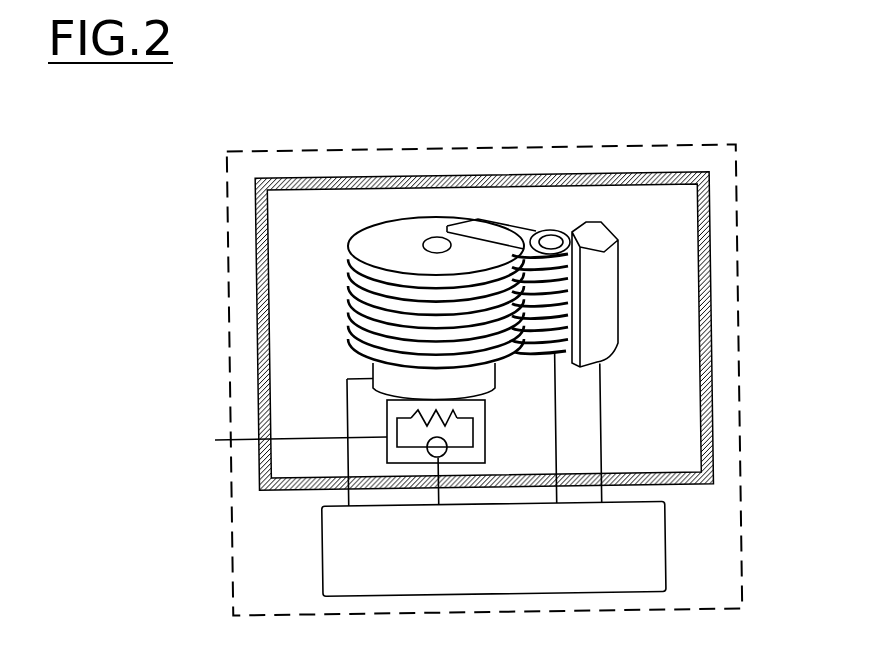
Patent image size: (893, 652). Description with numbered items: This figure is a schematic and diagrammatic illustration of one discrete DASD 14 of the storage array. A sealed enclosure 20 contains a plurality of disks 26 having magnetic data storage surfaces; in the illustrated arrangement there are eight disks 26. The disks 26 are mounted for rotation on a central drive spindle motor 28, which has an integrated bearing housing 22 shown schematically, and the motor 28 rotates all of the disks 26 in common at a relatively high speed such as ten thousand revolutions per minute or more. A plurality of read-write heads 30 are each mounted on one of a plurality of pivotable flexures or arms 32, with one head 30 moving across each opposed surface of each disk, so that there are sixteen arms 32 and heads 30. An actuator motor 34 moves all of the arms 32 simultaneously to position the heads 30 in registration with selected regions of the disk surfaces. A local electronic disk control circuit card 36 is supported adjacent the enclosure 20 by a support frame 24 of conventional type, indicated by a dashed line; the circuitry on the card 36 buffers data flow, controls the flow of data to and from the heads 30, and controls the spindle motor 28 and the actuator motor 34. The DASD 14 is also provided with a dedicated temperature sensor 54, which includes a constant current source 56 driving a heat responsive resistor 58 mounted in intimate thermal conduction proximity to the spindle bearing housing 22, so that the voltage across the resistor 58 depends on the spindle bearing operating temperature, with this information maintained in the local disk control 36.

The DASD 14 is at (713, 134).
The sealed enclosure 20 is at (256, 194).
The bearing housing 22 is at (400, 383).
The support frame 24 is at (748, 316).
The disks 26 is at (355, 283).
The spindle motor 28 is at (425, 240).
The read-write heads 30 is at (448, 227).
The arms 32 is at (520, 234).
The actuator motor 34 is at (600, 240).
The local electronic disk control circuit card 36 is at (665, 510).
The temperature sensor 54 is at (287, 440).
The constant current source 56 is at (484, 449).
The heat responsive resistor 58 is at (452, 412).